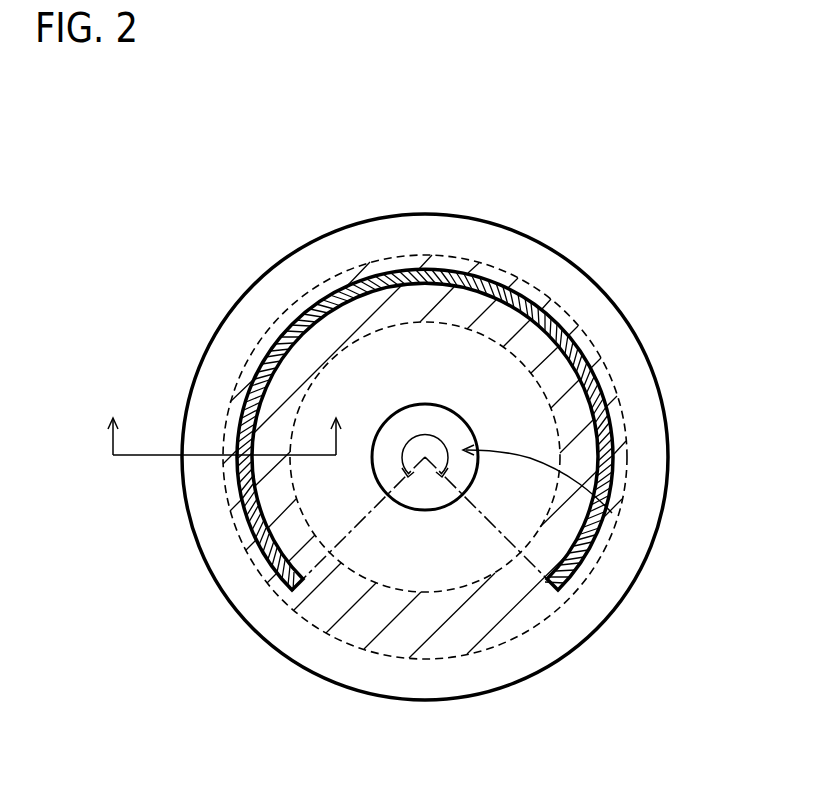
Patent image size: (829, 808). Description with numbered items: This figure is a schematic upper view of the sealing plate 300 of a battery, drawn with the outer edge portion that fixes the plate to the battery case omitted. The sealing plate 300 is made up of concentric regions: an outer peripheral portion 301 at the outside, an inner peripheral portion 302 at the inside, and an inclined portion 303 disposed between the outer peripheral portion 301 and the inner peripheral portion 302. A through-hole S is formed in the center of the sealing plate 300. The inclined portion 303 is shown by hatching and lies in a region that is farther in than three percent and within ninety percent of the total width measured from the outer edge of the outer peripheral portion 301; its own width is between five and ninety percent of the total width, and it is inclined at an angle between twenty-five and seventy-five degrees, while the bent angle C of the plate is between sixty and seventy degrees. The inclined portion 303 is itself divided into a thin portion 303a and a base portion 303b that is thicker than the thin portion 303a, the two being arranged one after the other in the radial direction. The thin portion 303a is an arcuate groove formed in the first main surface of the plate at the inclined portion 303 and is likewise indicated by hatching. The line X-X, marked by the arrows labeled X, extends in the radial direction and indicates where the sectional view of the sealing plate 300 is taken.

The sealing plate 300 is at (437, 110).
The outer peripheral portion 301 is at (313, 650).
The inner peripheral portion 302 is at (422, 552).
The inclined portion 303 is at (665, 150).
The thin portion 303a is at (530, 337).
The base portion 303b is at (587, 345).
The through-hole S is at (612, 513).
The bent angle C is at (425, 457).
The line X- X is at (226, 438).